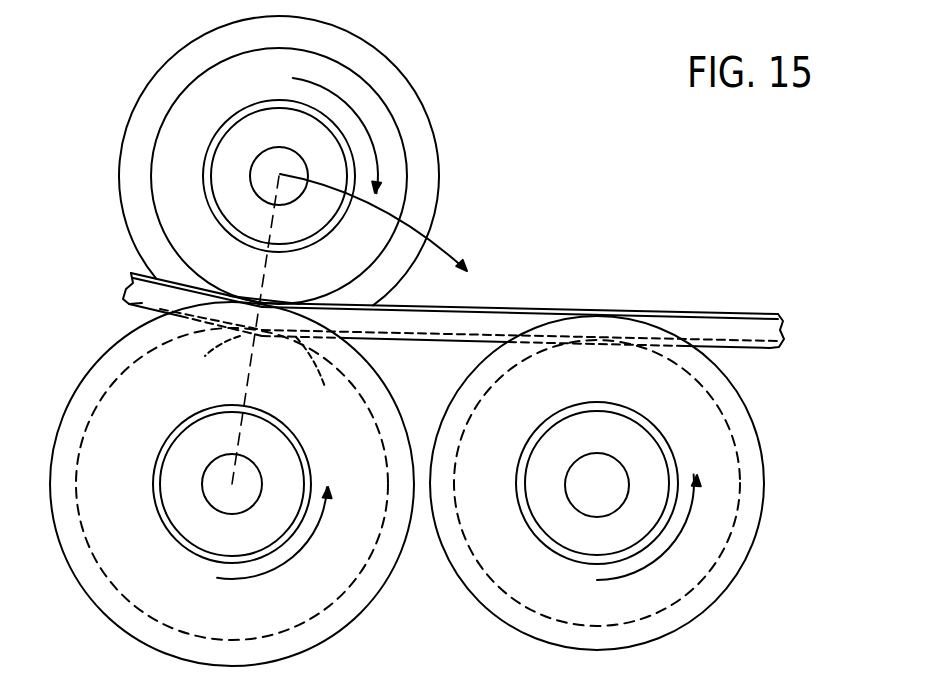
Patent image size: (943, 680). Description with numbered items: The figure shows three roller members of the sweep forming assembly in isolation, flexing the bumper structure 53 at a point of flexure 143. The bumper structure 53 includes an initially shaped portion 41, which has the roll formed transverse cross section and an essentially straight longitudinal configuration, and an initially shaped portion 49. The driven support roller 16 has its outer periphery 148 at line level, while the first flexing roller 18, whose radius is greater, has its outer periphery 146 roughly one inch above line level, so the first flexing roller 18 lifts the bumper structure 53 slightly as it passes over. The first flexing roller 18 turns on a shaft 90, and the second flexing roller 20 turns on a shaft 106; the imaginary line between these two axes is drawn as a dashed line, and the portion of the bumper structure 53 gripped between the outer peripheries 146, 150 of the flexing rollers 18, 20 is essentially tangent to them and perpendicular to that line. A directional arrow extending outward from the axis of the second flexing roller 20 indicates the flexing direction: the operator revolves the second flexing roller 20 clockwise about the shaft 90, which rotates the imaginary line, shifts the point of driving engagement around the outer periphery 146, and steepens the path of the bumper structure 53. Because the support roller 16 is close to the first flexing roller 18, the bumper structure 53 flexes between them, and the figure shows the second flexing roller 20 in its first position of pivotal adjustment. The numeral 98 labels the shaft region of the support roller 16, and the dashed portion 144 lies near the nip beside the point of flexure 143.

The support roller 16 is at (768, 462).
The first flexing roller 18 is at (113, 626).
The second flexing roller 20 is at (432, 109).
The initially shaped portion 41 is at (753, 330).
The initially shaped portion 49 is at (148, 298).
The bumper structure 53 is at (126, 271).
The shaft 90 is at (217, 488).
The roller shaft 98 is at (612, 500).
The shaft 106 is at (263, 165).
The point of flexure 143 is at (322, 379).
The web portion 144 is at (206, 363).
The outer periphery 146 is at (270, 300).
The outer periphery 148 is at (598, 316).
The outer periphery 150 is at (438, 183).